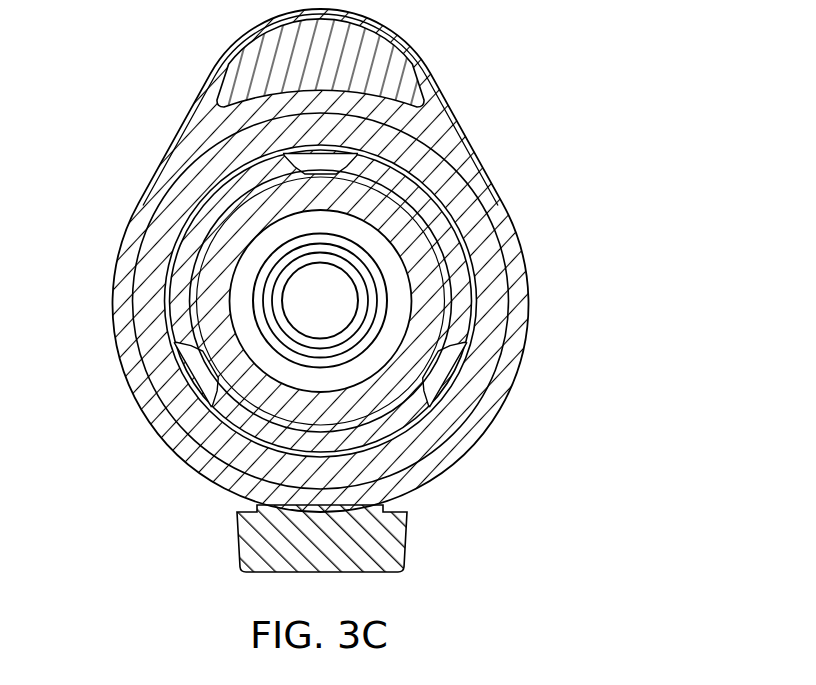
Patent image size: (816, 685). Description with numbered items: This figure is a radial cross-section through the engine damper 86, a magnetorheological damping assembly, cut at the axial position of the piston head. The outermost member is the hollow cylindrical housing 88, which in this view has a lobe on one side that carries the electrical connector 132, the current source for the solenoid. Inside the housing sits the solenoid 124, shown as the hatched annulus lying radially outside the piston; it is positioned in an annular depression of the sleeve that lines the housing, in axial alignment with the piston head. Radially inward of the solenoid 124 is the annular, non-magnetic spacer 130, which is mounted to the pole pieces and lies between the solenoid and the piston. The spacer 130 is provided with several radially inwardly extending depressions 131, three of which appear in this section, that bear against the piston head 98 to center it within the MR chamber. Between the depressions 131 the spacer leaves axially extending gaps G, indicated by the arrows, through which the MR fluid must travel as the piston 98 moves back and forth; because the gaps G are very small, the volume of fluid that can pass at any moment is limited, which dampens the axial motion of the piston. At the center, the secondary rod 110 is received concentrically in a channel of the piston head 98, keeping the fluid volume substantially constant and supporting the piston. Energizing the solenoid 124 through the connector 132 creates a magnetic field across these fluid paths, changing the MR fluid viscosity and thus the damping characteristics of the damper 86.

The engine damper 86 is at (394, 286).
The cylindrical housing 88 is at (143, 197).
The piston 98 is at (205, 290).
The secondary rod 110 is at (254, 302).
The solenoid 124 is at (150, 240).
The annular non-magnetic spacer 130 is at (202, 437).
The radially inwardly extending depressions 131 is at (413, 133).
The electrical connector 132 is at (256, 50).
The axially extending gaps G is at (215, 215).